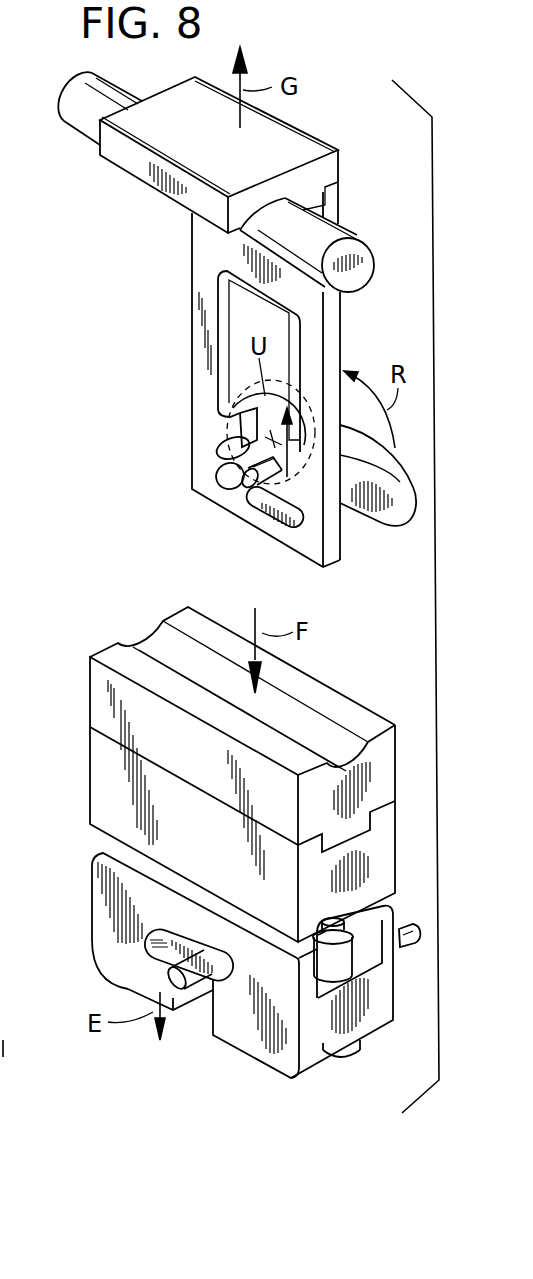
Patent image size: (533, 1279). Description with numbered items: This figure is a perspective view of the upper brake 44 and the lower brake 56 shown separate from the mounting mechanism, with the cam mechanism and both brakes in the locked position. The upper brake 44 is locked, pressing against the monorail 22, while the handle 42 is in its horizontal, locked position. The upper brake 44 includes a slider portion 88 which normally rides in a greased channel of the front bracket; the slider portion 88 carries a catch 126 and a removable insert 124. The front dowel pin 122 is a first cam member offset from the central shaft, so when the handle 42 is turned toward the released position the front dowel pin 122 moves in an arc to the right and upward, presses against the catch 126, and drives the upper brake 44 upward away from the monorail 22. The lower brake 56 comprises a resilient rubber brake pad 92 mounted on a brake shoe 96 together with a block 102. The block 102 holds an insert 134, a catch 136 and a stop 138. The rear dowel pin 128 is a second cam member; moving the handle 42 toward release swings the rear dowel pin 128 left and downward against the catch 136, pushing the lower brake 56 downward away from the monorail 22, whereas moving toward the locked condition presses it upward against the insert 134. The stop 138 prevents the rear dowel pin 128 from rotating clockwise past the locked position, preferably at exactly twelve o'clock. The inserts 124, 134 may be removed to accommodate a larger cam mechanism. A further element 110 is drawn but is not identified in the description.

The upper brake 44 is at (283, 143).
The monorail 22 is at (332, 230).
The slider portion 88 is at (332, 205).
The catch 126 is at (297, 468).
The front dowel pin 122 is at (250, 487).
The insert 124 is at (217, 473).
The handle 42 is at (387, 513).
The lower brake 56 is at (82, 697).
The brake pad 92 is at (100, 652).
The brake shoe 96 is at (113, 790).
The block 102 is at (108, 893).
The insert 134 is at (207, 950).
The rear dowel pin 128 is at (192, 992).
The catch 136 is at (150, 995).
The stop 138 is at (236, 990).
The locking pin 110 is at (408, 945).